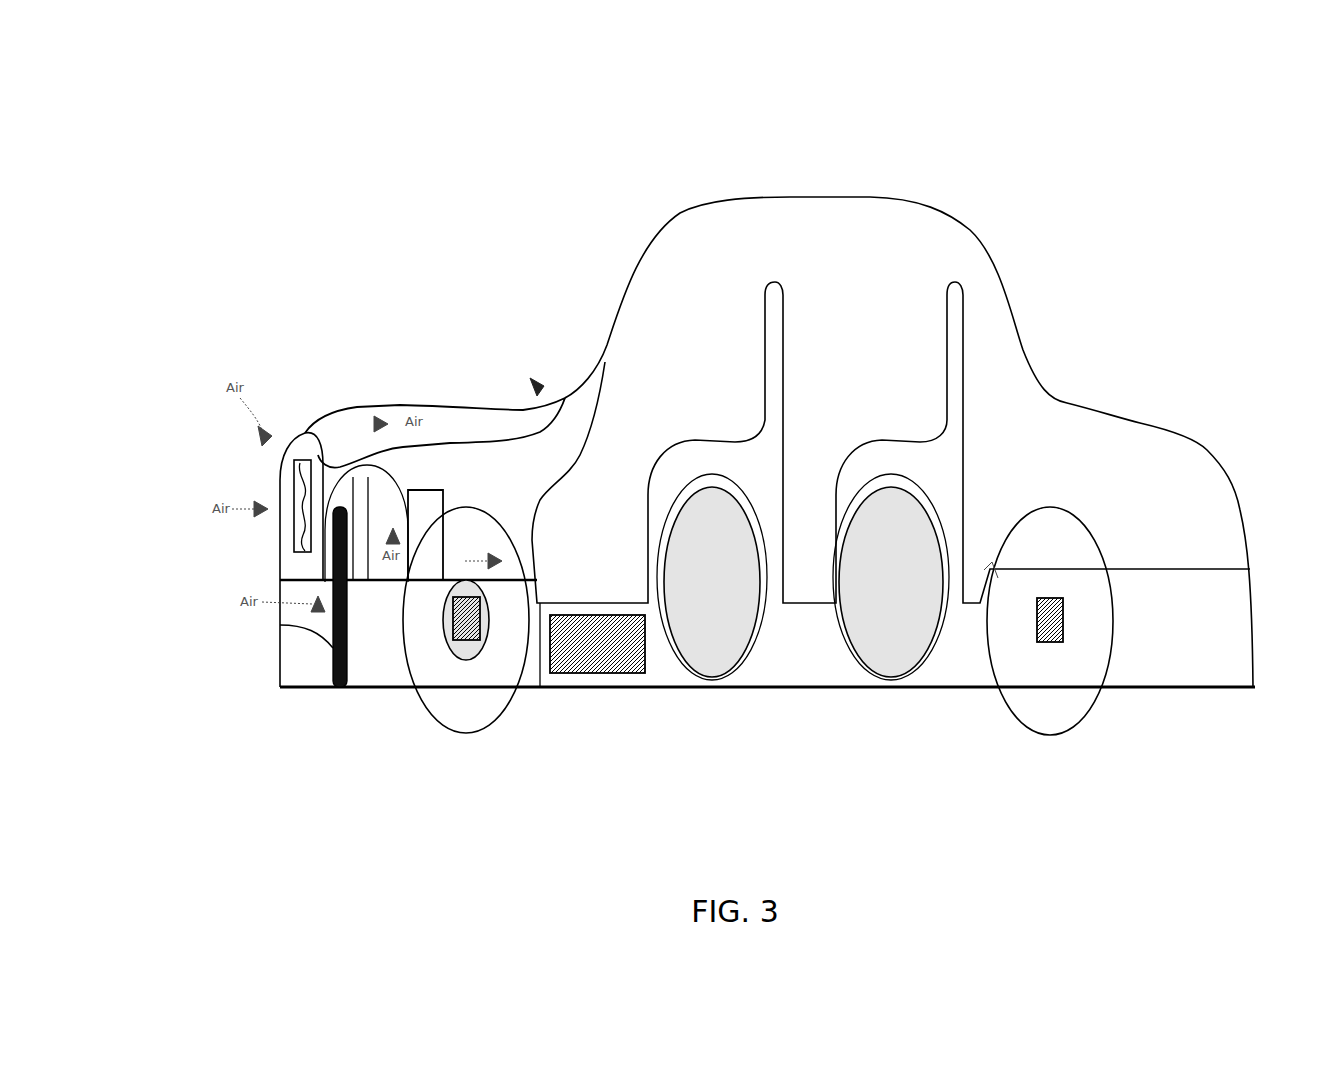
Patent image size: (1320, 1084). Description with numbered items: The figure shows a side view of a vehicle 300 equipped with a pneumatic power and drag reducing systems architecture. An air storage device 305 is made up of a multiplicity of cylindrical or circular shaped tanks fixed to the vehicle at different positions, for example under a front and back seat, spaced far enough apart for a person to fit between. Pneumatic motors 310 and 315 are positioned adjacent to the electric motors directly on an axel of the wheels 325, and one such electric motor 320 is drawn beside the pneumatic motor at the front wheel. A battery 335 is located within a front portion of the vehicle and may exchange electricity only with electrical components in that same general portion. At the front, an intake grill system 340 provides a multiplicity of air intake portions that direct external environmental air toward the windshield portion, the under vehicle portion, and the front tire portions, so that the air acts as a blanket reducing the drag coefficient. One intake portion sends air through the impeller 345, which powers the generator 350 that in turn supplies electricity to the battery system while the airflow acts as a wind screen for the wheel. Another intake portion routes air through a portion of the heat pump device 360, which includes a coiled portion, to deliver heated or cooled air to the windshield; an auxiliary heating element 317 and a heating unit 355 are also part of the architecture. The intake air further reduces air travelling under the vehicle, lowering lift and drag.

The vehicle 300 is at (194, 176).
The air storage device 305 is at (886, 582).
The pneumatic motor 310 is at (465, 622).
The pneumatic motor 315 is at (1045, 632).
The auxiliary heating element 317 is at (364, 479).
The electric motor 320 is at (487, 614).
The wheels 325 is at (497, 667).
The battery 335 is at (415, 505).
The intake grill system 340 is at (297, 593).
The impeller 345 is at (335, 628).
The generator 350 is at (340, 540).
The heating unit 355 is at (593, 645).
The heat pump device 360 is at (302, 473).